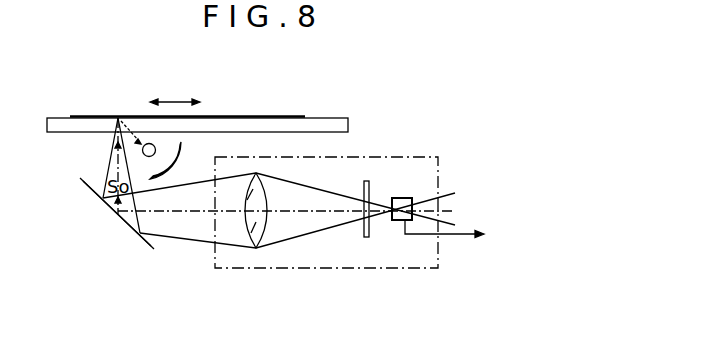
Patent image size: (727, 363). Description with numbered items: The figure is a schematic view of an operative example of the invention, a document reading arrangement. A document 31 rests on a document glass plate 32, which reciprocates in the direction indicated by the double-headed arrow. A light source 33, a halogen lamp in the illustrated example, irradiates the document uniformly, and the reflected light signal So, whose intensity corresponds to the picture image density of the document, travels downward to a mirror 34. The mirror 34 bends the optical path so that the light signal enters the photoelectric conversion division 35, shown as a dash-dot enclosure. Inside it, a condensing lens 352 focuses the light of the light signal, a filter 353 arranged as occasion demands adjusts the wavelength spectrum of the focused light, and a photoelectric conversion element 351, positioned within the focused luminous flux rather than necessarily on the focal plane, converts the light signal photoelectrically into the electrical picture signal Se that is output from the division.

The document 31 is at (282, 116).
The document glass plate 32 is at (324, 118).
The light source 33 is at (157, 144).
The mirror 34 is at (123, 226).
The photoelectric conversion division 35 is at (310, 268).
The photoelectric conversion element 351 is at (407, 198).
The condensing lens 352 is at (264, 192).
The filter 353 is at (366, 181).